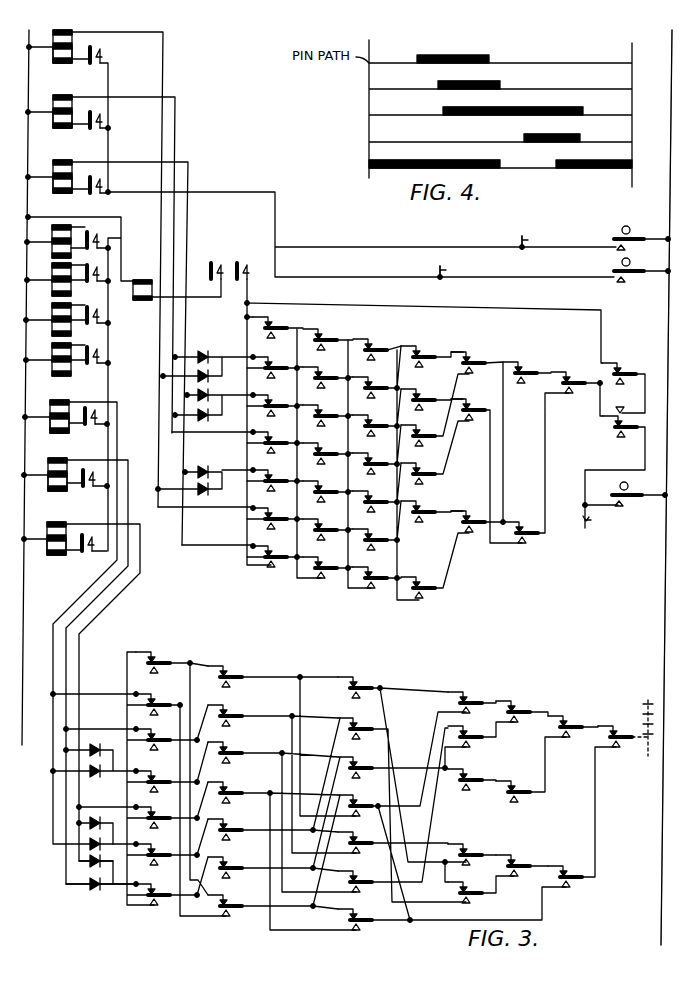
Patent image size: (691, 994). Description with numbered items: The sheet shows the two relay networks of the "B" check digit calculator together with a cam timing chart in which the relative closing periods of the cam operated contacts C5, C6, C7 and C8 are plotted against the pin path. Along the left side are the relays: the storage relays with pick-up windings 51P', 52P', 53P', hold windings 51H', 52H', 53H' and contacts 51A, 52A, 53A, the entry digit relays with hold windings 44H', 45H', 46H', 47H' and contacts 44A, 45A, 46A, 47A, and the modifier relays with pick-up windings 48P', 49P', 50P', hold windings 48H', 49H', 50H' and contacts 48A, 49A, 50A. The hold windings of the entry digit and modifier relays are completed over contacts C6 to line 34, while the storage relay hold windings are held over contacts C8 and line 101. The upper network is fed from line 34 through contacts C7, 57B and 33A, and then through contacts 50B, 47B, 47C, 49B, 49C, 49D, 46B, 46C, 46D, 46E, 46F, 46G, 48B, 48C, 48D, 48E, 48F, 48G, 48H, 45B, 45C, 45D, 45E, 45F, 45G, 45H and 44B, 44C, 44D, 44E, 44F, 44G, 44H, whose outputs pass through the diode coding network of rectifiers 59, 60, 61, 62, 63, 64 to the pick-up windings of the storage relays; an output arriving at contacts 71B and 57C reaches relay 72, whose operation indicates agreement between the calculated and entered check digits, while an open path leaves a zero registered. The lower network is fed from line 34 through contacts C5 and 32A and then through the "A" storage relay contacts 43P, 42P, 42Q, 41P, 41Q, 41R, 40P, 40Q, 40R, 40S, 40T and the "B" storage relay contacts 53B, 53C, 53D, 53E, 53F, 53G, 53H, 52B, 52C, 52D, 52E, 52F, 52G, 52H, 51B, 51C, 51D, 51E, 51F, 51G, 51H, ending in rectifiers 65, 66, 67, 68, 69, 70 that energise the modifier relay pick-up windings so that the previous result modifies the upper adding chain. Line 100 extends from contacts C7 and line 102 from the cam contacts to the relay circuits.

In FIG. 3, the pick-up winding 51P' is at (81, 36).
In FIG. 3, the hold winding 51H' is at (81, 65).
In FIG. 3, the contacts 51A is at (102, 53).
In FIG. 3, the pick-up winding 52P' is at (55, 99).
In FIG. 3, the hold winding 52H' is at (81, 130).
In FIG. 3, the contacts 52A is at (102, 118).
In FIG. 3, the pick-up winding 53P' is at (54, 164).
In FIG. 3, the hold winding 53H' is at (81, 195).
In FIG. 3, the contacts 53A is at (102, 183).
In FIG. 3, the hold winding 44H' is at (53, 230).
In FIG. 3, the contacts 44A is at (99, 244).
In FIG. 3, the hold winding 45H' is at (102, 294).
In FIG. 3, the contacts 45A is at (98, 277).
In FIG. 3, the hold winding 46H' is at (102, 336).
In FIG. 3, the contacts 46A is at (98, 320).
In FIG. 3, the hold winding 47H' is at (78, 373).
In FIG. 3, the contacts 47A is at (98, 360).
In FIG. 3, the pick-up winding 48P' is at (52, 410).
In FIG. 3, the hold winding 48H' is at (77, 436).
In FIG. 3, the contacts 48A is at (97, 425).
In FIG. 3, the pick-up winding 49P' is at (50, 466).
In FIG. 3, the hold winding 49H' is at (50, 495).
In FIG. 3, the contacts 49A is at (95, 476).
In FIG. 3, the pick-up winding 50P' is at (75, 528).
In FIG. 3, the hold winding 50H' is at (50, 562).
In FIG. 3, the contacts 50A is at (89, 553).
In FIG. 3, the relay 72 is at (150, 296).
In FIG. 3, the contacts 57C is at (211, 280).
In FIG. 3, the contacts 71B is at (247, 282).
In FIG. 3, the rectifier 59 is at (200, 364).
In FIG. 3, the rectifier 60 is at (210, 378).
In FIG. 3, the rectifier 61 is at (195, 388).
In FIG. 3, the rectifier 62 is at (210, 416).
In FIG. 3, the rectifier 63 is at (202, 468).
In FIG. 3, the rectifier 64 is at (196, 489).
In FIG. 3, the contacts 44B is at (281, 319).
In FIG. 3, the contacts 44C is at (281, 358).
In FIG. 3, the contacts 44D is at (281, 396).
In FIG. 3, the contacts 44E is at (281, 433).
In FIG. 3, the contacts 44F is at (281, 471).
In FIG. 3, the contacts 44G is at (281, 509).
In FIG. 3, the contacts 44H is at (270, 550).
In FIG. 3, the contacts 45B is at (331, 331).
In FIG. 3, the contacts 45C is at (331, 368).
In FIG. 3, the contacts 45D is at (331, 406).
In FIG. 3, the contacts 45E is at (331, 444).
In FIG. 3, the contacts 45F is at (331, 482).
In FIG. 3, the contacts 45G is at (331, 520).
In FIG. 3, the contacts 45H is at (320, 561).
In FIG. 3, the contacts 48B is at (381, 341).
In FIG. 3, the contacts 48C is at (381, 378).
In FIG. 3, the contacts 48D is at (381, 416).
In FIG. 3, the contacts 48E is at (381, 454).
In FIG. 3, the contacts 48F is at (381, 492).
In FIG. 3, the contacts 48G is at (381, 530).
In FIG. 3, the contacts 48H is at (370, 571).
In FIG. 3, the contacts 46B is at (429, 346).
In FIG. 3, the contacts 46C is at (429, 390).
In FIG. 3, the contacts 46D is at (429, 426).
In FIG. 3, the contacts 46E is at (429, 464).
In FIG. 3, the contacts 46F is at (429, 502).
In FIG. 3, the contacts 46G is at (429, 578).
In FIG. 3, the contacts 49B is at (481, 354).
In FIG. 3, the contacts 49C is at (481, 399).
In FIG. 3, the contacts 49D is at (481, 512).
In FIG. 3, the contacts 47B is at (531, 361).
In FIG. 3, the contacts 47C is at (532, 522).
In FIG. 3, the contacts 50B is at (575, 379).
In FIG. 3, the contacts 33A is at (626, 370).
In FIG. 3, the contacts 57B is at (623, 431).
In FIG. 3, the cam operated contacts C6 is at (623, 235).
In FIG. 4, the cam operated contacts C6 is at (369, 115).
In FIG. 3, the cam operated contacts C7 is at (612, 500).
In FIG. 4, the cam operated contacts C7 is at (369, 142).
In FIG. 3, the cam operated contacts C8 is at (622, 277).
In FIG. 4, the cam operated contacts C8 is at (369, 168).
In FIG. 4, the cam operated contacts C5 is at (369, 89).
In FIG. 3, the line 100 is at (602, 523).
In FIG. 3, the line 101 is at (440, 270).
In FIG. 3, the line 102 is at (522, 240).
In FIG. 3, the line 34 is at (663, 603).
In FIG. 3, the contacts 51B is at (162, 659).
In FIG. 3, the contacts 51C is at (166, 693).
In FIG. 3, the contacts 51D is at (166, 728).
In FIG. 3, the contacts 51E is at (166, 770).
In FIG. 3, the contacts 51F is at (166, 806).
In FIG. 3, the contacts 51G is at (166, 843).
In FIG. 3, the contacts 51H is at (156, 887).
In FIG. 3, the contacts 52B is at (236, 673).
In FIG. 3, the contacts 52C is at (240, 704).
In FIG. 3, the contacts 52D is at (240, 741).
In FIG. 3, the contacts 52E is at (236, 789).
In FIG. 3, the contacts 52F is at (240, 818).
In FIG. 3, the contacts 52G is at (240, 856).
In FIG. 3, the contacts 52H is at (231, 898).
In FIG. 3, the contacts 53B is at (366, 674).
In FIG. 3, the contacts 53C is at (366, 717).
In FIG. 3, the contacts 53D is at (366, 756).
In FIG. 3, the contacts 53E is at (366, 794).
In FIG. 3, the contacts 53F is at (366, 831).
In FIG. 3, the contacts 53G is at (366, 870).
In FIG. 3, the contacts 53H is at (361, 913).
In FIG. 3, the contacts 40P is at (476, 690).
In FIG. 3, the contacts 40Q is at (478, 726).
In FIG. 3, the contacts 40R is at (478, 769).
In FIG. 3, the contacts 40S is at (476, 843).
In FIG. 3, the contacts 40T is at (478, 883).
In FIG. 3, the contacts 41P is at (522, 709).
In FIG. 3, the contacts 41Q is at (524, 780).
In FIG. 3, the contacts 41R is at (524, 854).
In FIG. 3, the contacts 42P is at (574, 724).
In FIG. 3, the contacts 42Q is at (574, 874).
In FIG. 3, the contacts 43P is at (626, 748).
In FIG. 3, the contacts 32A is at (647, 704).
In FIG. 3, the rectifier 65 is at (95, 750).
In FIG. 3, the rectifier 66 is at (97, 774).
In FIG. 3, the rectifier 67 is at (88, 822).
In FIG. 3, the rectifier 68 is at (88, 846).
In FIG. 3, the rectifier 69 is at (88, 862).
In FIG. 3, the rectifier 70 is at (88, 884).